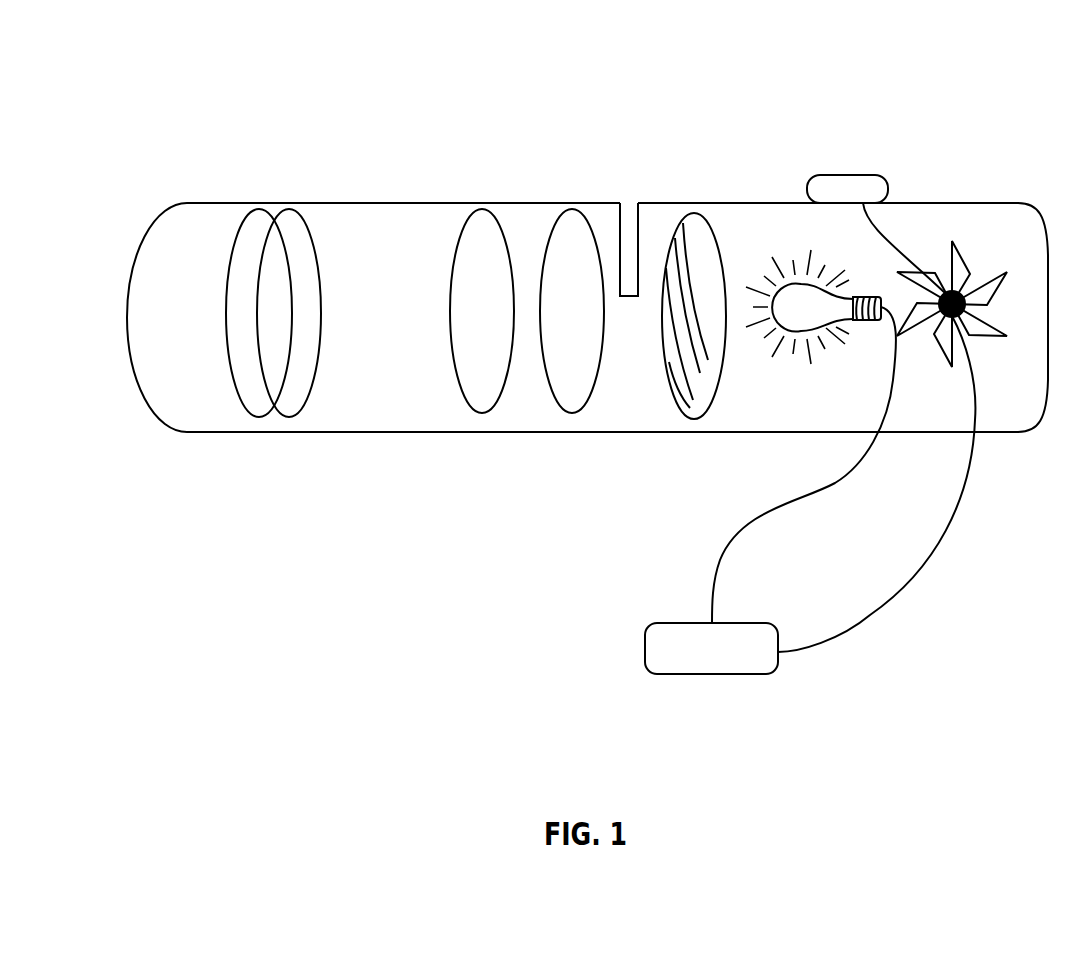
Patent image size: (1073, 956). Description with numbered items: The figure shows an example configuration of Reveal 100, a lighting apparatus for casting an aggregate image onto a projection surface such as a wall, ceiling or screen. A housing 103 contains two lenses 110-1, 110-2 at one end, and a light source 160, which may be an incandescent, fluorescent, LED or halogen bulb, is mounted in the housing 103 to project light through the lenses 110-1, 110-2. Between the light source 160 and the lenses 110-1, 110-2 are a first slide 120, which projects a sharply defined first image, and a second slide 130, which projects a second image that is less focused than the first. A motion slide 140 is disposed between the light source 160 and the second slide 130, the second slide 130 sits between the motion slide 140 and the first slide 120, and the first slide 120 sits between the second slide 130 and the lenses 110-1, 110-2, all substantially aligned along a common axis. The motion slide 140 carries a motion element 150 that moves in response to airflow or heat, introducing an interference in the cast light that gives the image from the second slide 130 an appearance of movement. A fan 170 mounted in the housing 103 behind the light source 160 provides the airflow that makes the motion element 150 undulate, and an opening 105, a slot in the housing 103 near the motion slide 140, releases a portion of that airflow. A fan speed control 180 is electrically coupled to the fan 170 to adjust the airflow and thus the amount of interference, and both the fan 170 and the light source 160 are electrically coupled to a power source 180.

The Reveal 100 is at (243, 90).
The housing 103 is at (320, 200).
The opening 105 is at (632, 203).
The lens 110-1 is at (245, 408).
The lens 110-2 is at (280, 415).
The first slide 120 is at (467, 405).
The second slide 130 is at (555, 402).
The motion slide 140 is at (663, 375).
The motion element 150 is at (685, 392).
The light source 160 is at (807, 340).
The fan 170 is at (980, 277).
The fan speed control / power source 180 is at (817, 173).